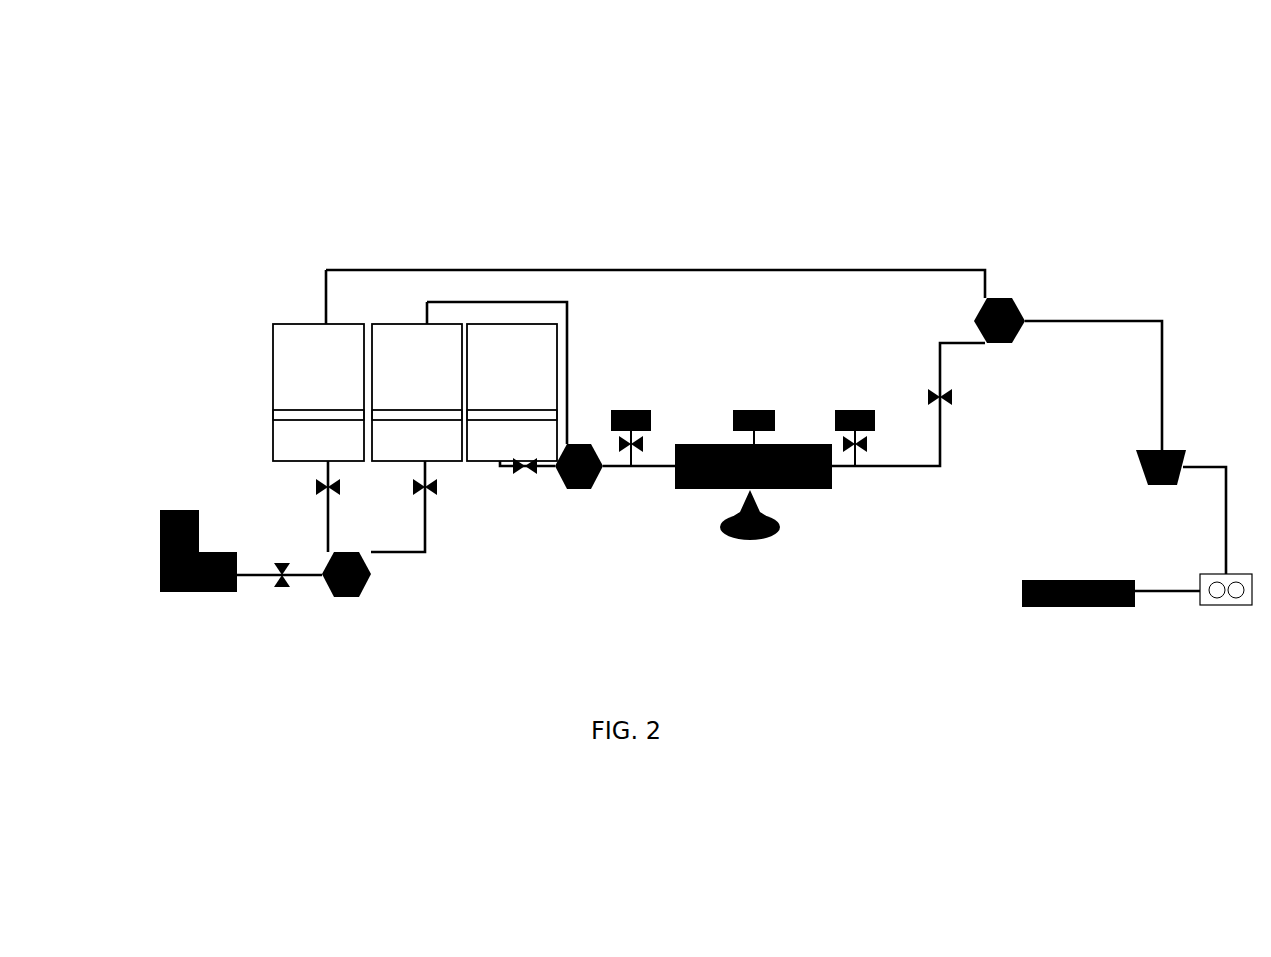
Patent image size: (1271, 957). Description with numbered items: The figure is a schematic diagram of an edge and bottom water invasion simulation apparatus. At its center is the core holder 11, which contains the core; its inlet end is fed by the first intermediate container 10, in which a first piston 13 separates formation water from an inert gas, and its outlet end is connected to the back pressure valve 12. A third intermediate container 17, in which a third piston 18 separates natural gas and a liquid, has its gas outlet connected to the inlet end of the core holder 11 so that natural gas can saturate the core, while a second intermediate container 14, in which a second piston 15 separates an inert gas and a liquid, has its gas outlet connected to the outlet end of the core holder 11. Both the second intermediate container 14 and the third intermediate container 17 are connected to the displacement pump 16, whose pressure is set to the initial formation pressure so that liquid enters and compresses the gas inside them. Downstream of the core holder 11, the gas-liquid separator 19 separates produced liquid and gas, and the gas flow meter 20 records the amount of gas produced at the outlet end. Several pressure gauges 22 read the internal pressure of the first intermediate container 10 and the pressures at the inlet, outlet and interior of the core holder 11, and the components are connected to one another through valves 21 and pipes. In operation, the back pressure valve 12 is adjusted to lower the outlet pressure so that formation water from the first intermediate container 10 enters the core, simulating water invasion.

The first intermediate container 10 is at (505, 322).
The core holder 11 is at (668, 490).
The back pressure valve 12 is at (1136, 455).
The first piston 13 is at (512, 422).
The second intermediate container 14 is at (325, 322).
The second piston 15 is at (273, 418).
The displacement pump 16 is at (160, 585).
The third intermediate container 17 is at (425, 322).
The third piston 18 is at (398, 422).
The gas-liquid separator 19 is at (1200, 600).
The gas flow meter 20 is at (1022, 595).
The valve 21 is at (330, 597).
The pressure gauge 22 is at (650, 410).